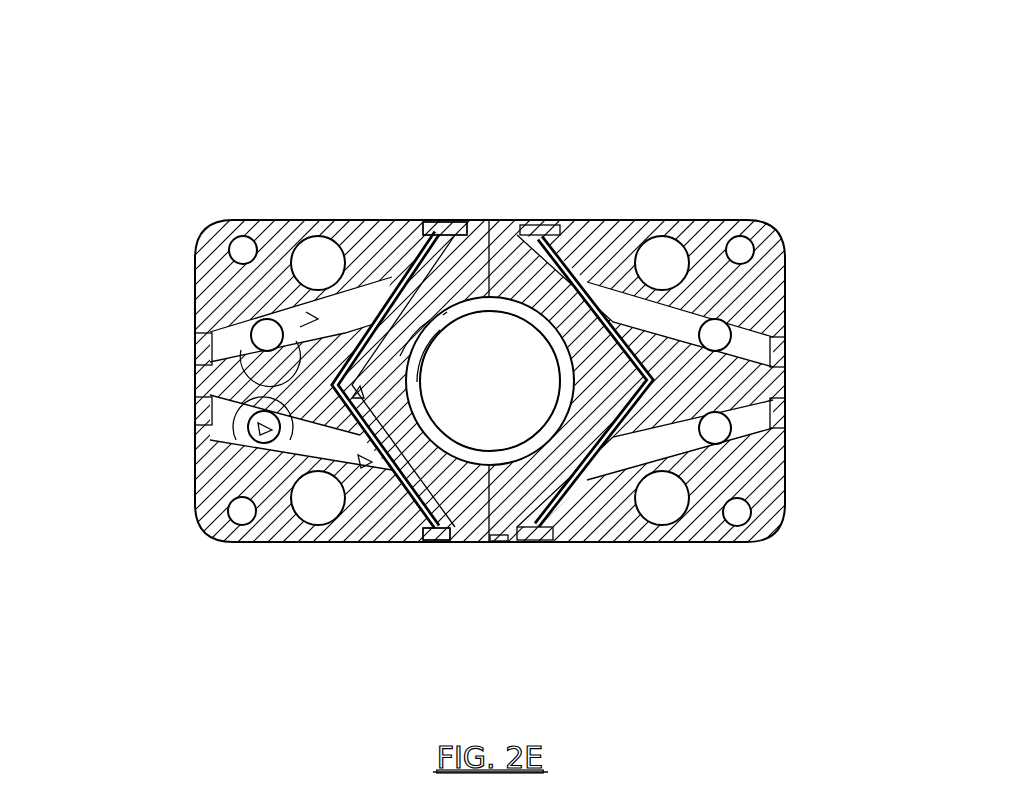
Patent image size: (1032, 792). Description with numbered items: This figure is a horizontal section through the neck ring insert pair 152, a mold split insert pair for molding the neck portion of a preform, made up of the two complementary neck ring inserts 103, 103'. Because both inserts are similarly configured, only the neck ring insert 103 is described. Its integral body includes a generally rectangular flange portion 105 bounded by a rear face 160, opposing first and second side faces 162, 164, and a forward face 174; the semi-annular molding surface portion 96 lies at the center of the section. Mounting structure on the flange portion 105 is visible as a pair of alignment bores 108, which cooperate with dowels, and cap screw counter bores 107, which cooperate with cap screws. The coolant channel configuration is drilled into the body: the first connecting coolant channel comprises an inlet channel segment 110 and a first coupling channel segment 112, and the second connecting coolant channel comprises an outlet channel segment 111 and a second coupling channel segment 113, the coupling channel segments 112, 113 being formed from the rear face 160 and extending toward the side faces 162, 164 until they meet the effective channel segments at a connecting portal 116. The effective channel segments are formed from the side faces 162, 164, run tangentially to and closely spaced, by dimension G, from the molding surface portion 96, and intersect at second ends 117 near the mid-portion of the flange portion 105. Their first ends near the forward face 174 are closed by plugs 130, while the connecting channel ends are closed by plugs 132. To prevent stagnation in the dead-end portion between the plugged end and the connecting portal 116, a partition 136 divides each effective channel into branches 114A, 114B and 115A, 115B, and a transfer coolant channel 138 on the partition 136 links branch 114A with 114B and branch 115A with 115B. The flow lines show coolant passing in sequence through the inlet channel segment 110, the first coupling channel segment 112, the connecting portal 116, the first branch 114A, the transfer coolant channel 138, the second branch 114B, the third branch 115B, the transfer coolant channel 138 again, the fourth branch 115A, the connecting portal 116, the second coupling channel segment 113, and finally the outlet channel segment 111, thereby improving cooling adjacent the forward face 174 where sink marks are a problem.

The molding surface portion 96 is at (533, 547).
The neck ring insert 103 is at (465, 496).
The neck ring insert 103' is at (717, 475).
The flange portion 105 is at (237, 280).
The cap screw counter bores 107 is at (316, 236).
The alignment bores 108 is at (245, 236).
The inlet channel segment 110 is at (262, 320).
The outlet channel segment 111 is at (215, 470).
The first coupling channel segment 112 is at (240, 338).
The second coupling channel segment 113 is at (245, 437).
The first branch 114A is at (427, 221).
The second branch 114B is at (400, 356).
The fourth branch 115A is at (423, 543).
The third branch 115B is at (417, 382).
The connecting portal 116 is at (395, 285).
The second ends 117 is at (295, 515).
The plugs 130 is at (450, 221).
The plugs 132 is at (197, 350).
The partition 136 is at (420, 404).
The transfer coolant channel 138 is at (447, 467).
The neck ring insert pair 152 is at (687, 137).
The rear face 160 is at (192, 327).
The first side face 162 is at (350, 219).
The second side face 164 is at (330, 544).
The forward face 174 is at (507, 545).
The dimension G is at (443, 315).